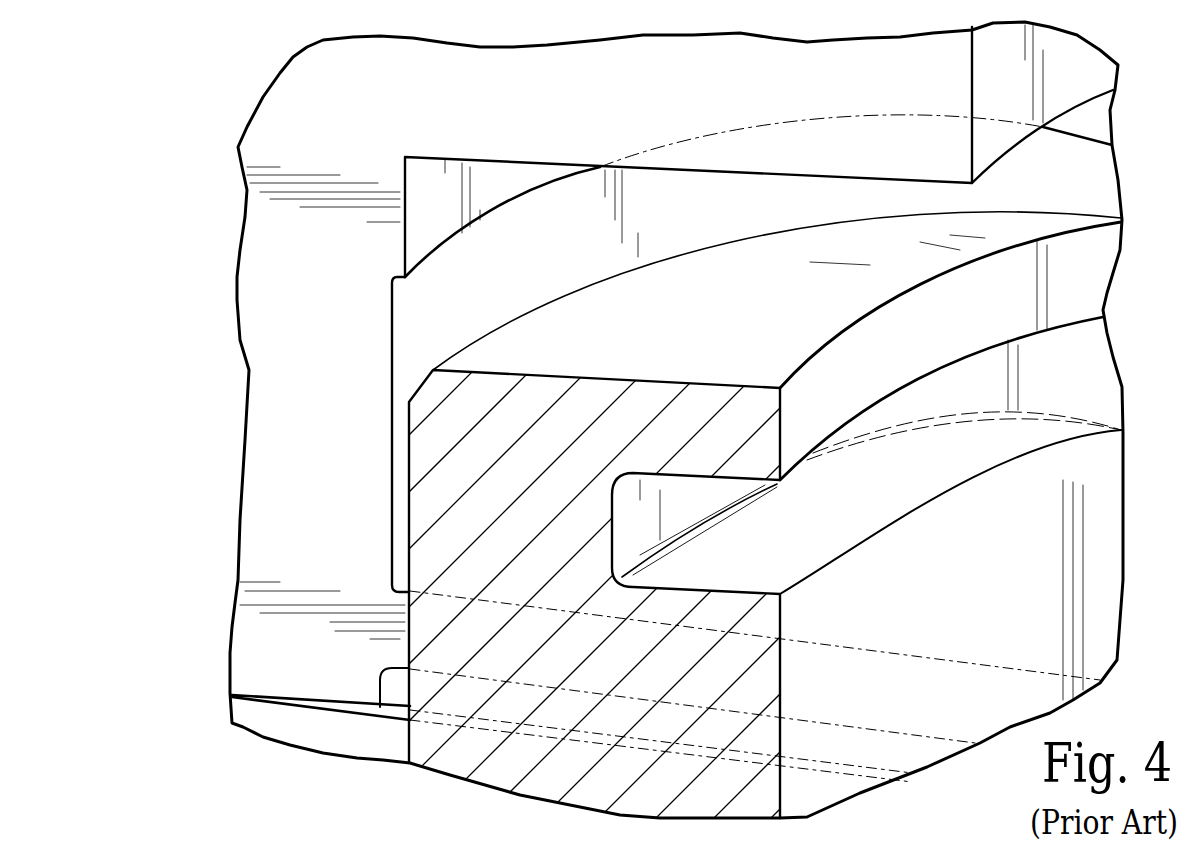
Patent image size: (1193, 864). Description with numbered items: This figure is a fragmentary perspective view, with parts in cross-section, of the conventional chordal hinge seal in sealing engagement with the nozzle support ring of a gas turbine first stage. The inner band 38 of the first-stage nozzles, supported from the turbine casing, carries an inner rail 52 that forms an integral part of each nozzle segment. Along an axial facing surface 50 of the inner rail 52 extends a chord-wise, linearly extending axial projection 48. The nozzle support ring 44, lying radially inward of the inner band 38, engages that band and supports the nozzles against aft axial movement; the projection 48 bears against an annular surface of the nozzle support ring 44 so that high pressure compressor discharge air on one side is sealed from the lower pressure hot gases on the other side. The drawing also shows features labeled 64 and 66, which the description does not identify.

The inner band 38 is at (320, 76).
The nozzle support ring 44 is at (505, 770).
The axial projection 48 is at (397, 648).
The axial facing surface 50 is at (407, 305).
The inner rail 52 is at (297, 413).
The stepped groove surface 64 is at (690, 333).
The housing shoulder 66 is at (1023, 143).